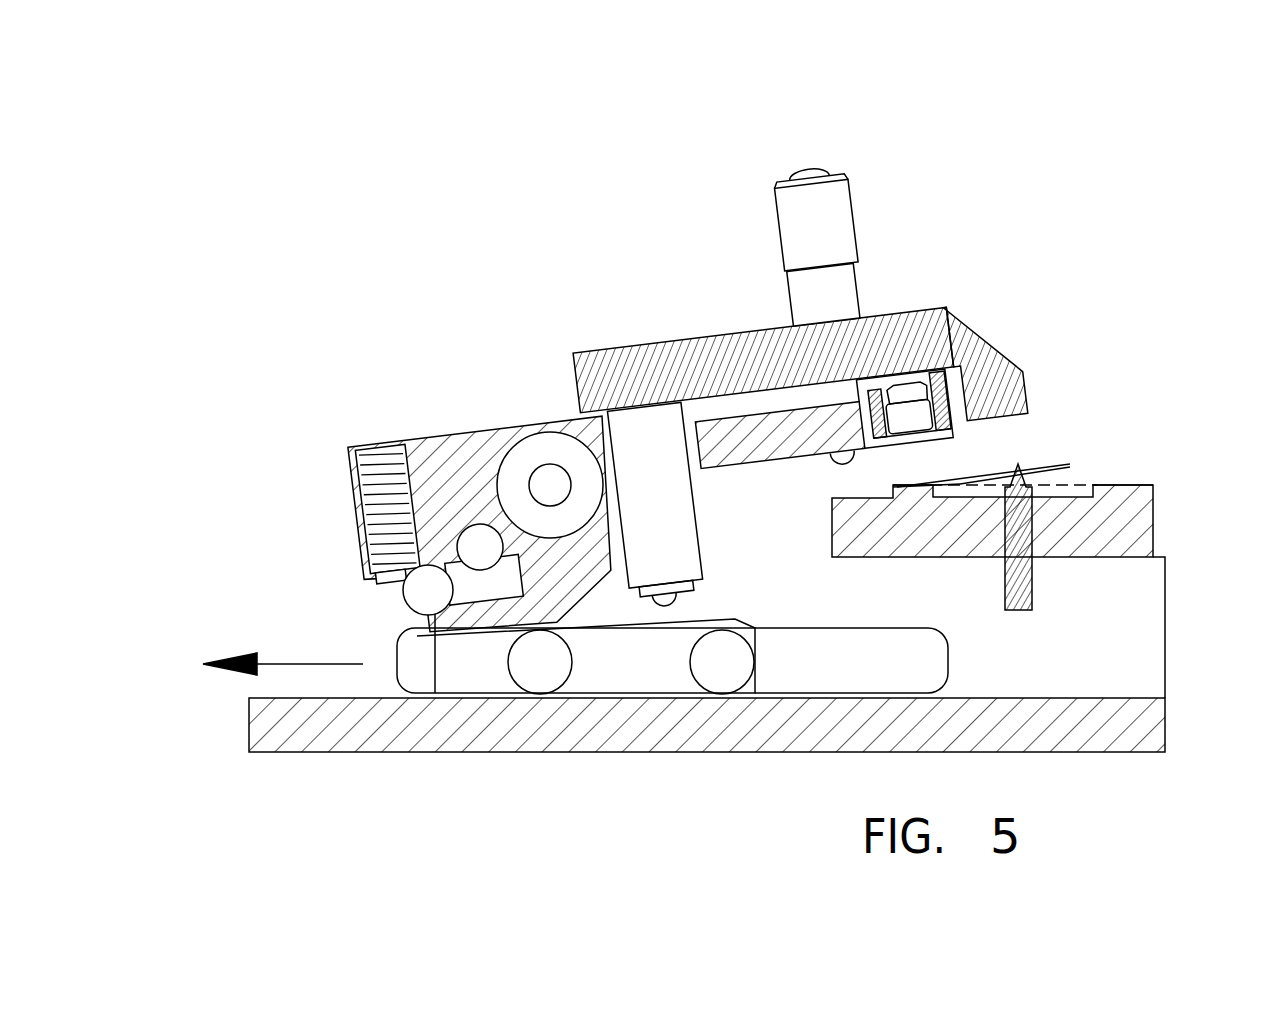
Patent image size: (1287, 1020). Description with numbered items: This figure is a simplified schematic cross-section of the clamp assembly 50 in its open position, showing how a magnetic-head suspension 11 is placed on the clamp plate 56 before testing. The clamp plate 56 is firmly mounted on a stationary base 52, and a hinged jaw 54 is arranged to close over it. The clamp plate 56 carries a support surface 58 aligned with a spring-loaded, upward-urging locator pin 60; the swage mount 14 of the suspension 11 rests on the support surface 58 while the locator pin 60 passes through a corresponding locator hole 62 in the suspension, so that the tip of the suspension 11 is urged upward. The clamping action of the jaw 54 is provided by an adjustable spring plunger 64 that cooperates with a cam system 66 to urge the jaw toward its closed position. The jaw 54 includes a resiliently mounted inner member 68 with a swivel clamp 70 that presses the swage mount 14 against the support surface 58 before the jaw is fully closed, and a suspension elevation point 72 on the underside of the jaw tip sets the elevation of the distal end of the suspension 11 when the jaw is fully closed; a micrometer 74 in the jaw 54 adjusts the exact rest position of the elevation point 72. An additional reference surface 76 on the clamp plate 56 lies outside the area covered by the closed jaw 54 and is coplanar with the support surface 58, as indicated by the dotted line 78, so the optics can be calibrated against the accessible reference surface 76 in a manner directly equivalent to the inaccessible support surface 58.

The clamp assembly 50 is at (940, 185).
The stationary base 52 is at (1168, 713).
The hinged jaw 54 is at (668, 337).
The clamp plate 56 is at (1157, 512).
The support surface 58 is at (907, 487).
The locator pin 60 is at (1035, 478).
The locator hole 62 is at (1020, 470).
The adjustable spring plunger 64 is at (393, 573).
The cam system 66 is at (635, 665).
The inner member 68 is at (760, 427).
The swivel clamp 70 is at (923, 427).
The suspension elevation point 72 is at (1030, 405).
The micrometer 74 is at (775, 213).
The reference surface 76 is at (1147, 486).
The dotted line 78 is at (1077, 483).
The magnetic-head suspension 11 is at (963, 472).
The swage mount 14 is at (893, 485).